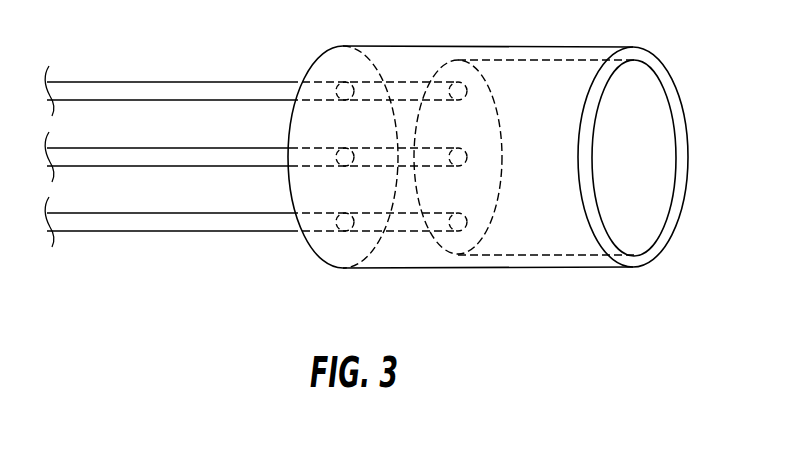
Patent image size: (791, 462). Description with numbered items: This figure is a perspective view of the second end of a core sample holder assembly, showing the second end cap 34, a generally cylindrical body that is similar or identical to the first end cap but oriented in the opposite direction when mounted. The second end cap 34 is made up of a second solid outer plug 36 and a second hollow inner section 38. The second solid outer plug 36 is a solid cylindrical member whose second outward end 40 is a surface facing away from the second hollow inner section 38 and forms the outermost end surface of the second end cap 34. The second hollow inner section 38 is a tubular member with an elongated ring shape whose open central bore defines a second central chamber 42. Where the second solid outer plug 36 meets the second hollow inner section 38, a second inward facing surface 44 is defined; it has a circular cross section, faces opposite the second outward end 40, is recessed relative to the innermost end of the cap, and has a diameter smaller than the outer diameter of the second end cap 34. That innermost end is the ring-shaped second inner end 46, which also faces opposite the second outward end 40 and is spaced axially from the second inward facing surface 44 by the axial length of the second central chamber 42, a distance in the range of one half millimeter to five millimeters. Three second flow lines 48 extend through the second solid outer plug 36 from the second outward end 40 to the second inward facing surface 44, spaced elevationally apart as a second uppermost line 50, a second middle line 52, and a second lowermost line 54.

The second end cap 34 is at (605, 34).
The second solid outer plug 36 is at (397, 265).
The second hollow inner section 38 is at (562, 266).
The second outward end 40 is at (323, 63).
The second central chamber 42 is at (667, 157).
The second inward facing surface 44 is at (497, 109).
The second inner end 46 is at (643, 260).
The second flow lines 48 is at (208, 52).
The second uppermost line 50 is at (115, 82).
The second middle line 52 is at (115, 147).
The second lowermost line 54 is at (115, 212).